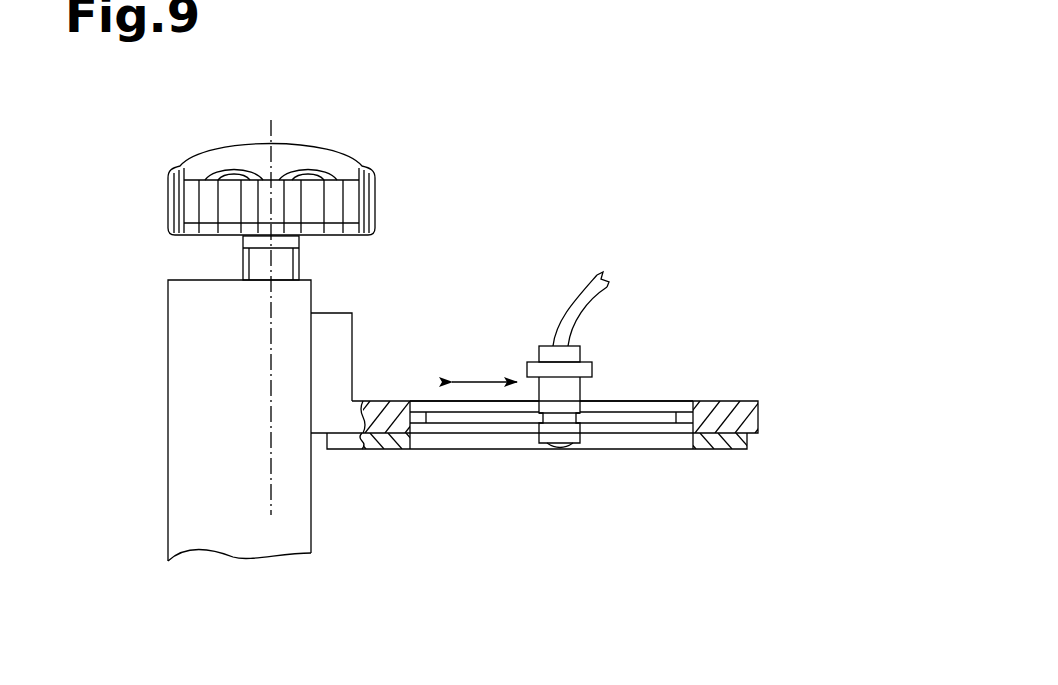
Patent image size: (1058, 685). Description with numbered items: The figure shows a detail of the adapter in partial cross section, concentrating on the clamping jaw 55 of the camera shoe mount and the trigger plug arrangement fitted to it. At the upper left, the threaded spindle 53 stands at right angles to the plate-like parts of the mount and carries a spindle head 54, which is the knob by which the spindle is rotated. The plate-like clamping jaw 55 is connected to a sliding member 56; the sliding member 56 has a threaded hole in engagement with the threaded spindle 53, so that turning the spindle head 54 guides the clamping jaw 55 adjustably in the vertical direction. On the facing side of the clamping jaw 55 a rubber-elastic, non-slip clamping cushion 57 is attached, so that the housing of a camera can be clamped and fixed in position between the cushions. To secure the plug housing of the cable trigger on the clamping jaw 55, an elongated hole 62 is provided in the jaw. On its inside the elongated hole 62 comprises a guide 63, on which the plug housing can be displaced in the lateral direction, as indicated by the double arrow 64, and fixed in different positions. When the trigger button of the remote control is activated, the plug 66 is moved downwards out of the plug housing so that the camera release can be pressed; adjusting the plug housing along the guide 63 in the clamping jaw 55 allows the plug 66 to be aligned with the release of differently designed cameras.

The threaded spindle 53 is at (237, 260).
The spindle head 54 is at (178, 158).
The clamping jaw 55 is at (770, 418).
The sliding member 56 is at (358, 330).
The clamping cushion 57 is at (376, 455).
The elongated hole 62 is at (435, 395).
The guide 63 is at (473, 413).
The double arrow 64 is at (483, 381).
The plug 66 is at (553, 453).